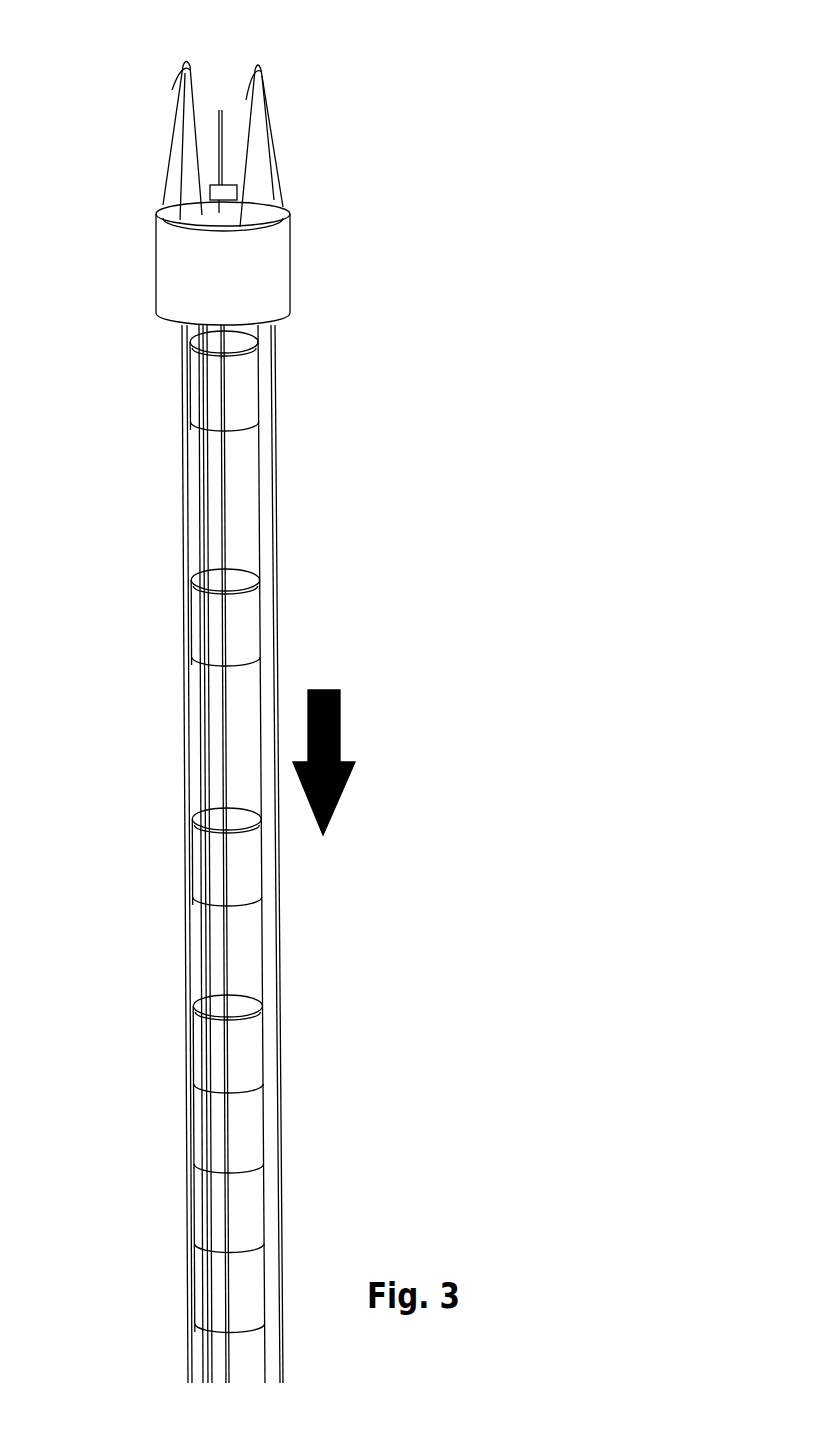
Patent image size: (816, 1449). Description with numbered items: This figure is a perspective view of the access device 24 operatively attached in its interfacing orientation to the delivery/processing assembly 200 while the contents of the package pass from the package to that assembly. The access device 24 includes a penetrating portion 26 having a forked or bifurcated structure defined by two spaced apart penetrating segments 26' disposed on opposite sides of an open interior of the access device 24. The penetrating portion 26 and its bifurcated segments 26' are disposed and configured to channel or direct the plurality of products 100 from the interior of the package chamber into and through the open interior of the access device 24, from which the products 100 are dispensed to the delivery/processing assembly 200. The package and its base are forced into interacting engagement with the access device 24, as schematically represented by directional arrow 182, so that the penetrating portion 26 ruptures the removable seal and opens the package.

The access device 24 is at (317, 263).
The penetrating portion 26 is at (320, 146).
The penetrating segments 26' is at (241, 145).
The products 100 is at (257, 403).
The directional arrow 182 is at (373, 753).
The delivery/processing assembly 200 is at (148, 768).